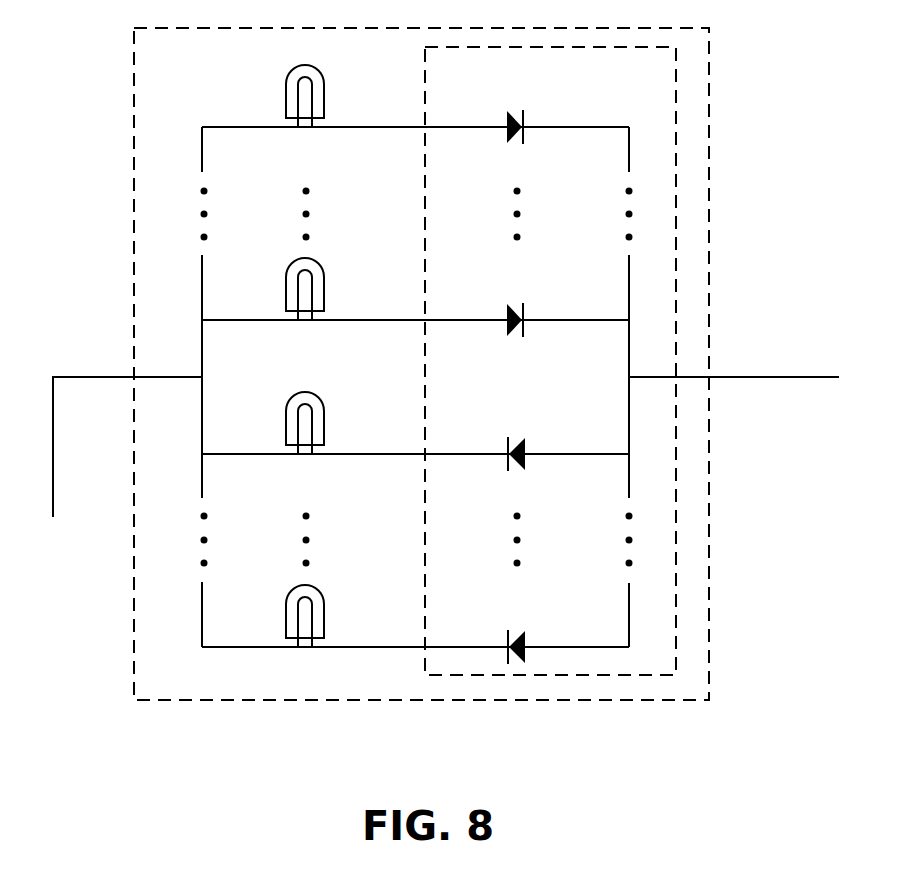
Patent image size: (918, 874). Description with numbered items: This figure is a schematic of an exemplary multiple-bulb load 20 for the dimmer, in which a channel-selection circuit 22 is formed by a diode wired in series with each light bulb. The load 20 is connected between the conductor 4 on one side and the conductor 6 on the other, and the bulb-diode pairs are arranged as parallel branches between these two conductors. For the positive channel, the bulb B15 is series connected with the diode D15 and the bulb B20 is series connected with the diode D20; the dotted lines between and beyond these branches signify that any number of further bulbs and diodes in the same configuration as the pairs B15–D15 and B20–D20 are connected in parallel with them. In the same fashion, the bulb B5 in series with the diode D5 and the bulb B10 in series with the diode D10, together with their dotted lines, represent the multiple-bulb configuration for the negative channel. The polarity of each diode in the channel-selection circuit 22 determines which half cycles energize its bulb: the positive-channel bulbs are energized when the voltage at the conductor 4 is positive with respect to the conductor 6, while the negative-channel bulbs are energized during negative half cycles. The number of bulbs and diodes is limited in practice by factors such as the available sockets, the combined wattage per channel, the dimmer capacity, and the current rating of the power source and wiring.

The load 20 is at (134, 112).
The channel-selection circuit 22 is at (425, 207).
The conductor 4 is at (53, 465).
The conductor 6 is at (781, 377).
The bulb B20 is at (286, 89).
The bulb B15 is at (286, 282).
The bulb B5 is at (286, 417).
The bulb B10 is at (324, 607).
The diode D20 is at (516, 108).
The diode D15 is at (515, 302).
The diode D5 is at (513, 440).
The diode D10 is at (524, 638).